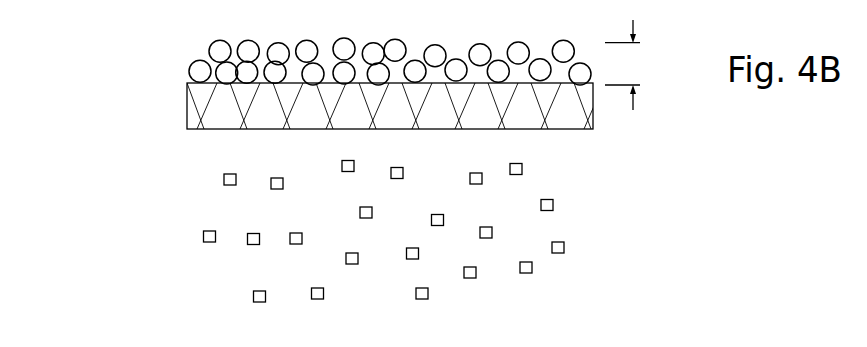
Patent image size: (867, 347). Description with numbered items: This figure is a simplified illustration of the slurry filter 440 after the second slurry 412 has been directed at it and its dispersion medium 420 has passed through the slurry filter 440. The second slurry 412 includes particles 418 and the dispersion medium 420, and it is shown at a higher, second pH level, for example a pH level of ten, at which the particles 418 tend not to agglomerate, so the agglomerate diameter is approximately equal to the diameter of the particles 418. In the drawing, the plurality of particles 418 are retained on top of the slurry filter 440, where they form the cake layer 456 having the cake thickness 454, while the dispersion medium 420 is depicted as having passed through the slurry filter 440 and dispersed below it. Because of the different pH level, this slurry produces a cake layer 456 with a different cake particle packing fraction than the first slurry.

The second slurry 412 is at (80, 162).
The particles 418 is at (335, 112).
The dispersion medium 420 is at (203, 237).
The slurry filter 440 is at (596, 118).
The cake thickness 454 is at (630, 56).
The cake layer 456 is at (170, 66).